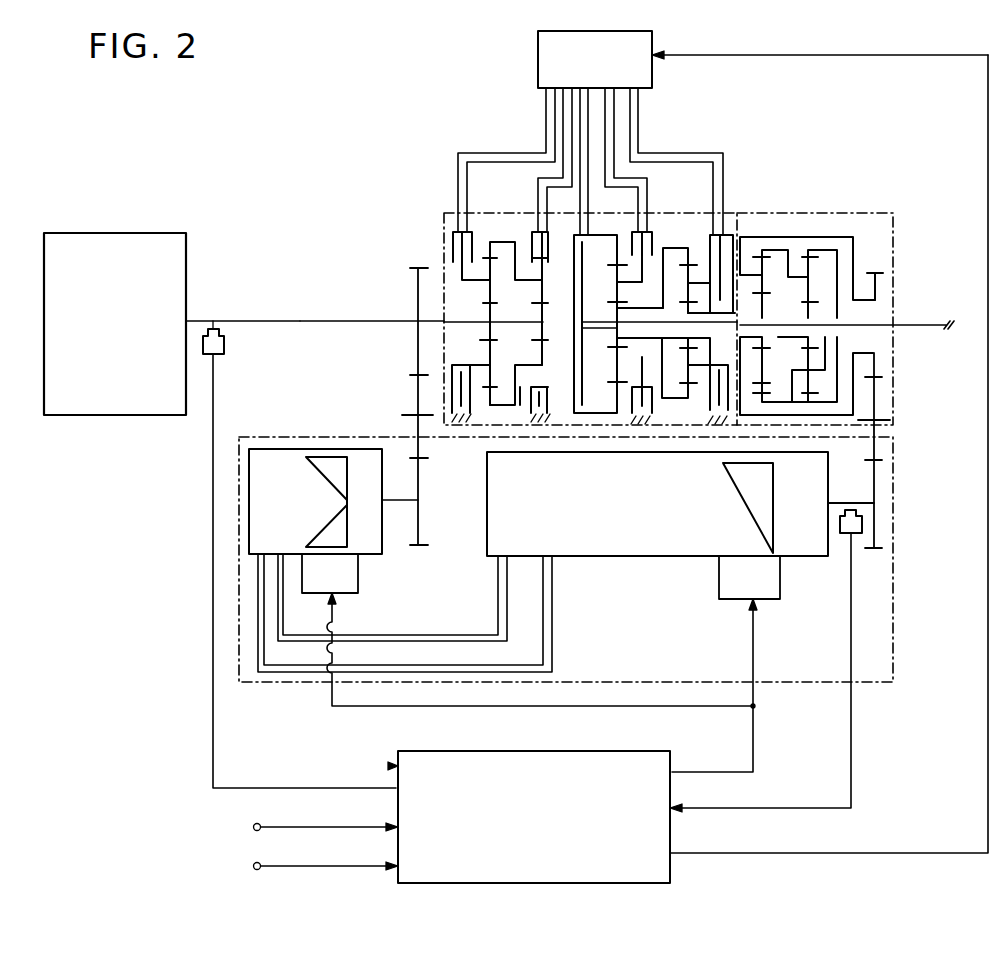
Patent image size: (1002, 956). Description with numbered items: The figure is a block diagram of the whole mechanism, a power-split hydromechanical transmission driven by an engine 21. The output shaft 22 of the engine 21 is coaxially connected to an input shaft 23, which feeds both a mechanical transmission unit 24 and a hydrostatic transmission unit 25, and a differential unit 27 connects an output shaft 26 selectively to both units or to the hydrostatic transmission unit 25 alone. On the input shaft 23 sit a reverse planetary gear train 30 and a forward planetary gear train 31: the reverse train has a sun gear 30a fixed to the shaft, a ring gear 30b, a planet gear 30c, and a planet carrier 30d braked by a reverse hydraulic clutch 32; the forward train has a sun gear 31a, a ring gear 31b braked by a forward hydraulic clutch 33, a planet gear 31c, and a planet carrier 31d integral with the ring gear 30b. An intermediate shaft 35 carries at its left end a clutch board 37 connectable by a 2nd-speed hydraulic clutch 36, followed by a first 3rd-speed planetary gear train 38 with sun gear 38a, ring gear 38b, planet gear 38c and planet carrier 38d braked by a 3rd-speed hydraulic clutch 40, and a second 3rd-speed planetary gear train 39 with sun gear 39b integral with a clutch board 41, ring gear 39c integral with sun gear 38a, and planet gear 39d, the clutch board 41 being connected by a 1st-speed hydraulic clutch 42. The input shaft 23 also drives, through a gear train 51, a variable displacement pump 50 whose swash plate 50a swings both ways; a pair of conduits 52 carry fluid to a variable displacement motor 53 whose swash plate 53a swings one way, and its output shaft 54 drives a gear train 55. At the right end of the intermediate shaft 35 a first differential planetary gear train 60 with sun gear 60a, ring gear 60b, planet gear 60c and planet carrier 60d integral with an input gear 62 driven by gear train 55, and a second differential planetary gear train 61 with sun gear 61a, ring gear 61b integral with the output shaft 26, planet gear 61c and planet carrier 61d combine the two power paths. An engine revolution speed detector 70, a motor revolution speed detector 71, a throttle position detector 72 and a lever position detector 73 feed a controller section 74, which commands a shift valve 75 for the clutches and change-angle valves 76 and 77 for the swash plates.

The engine 21 is at (157, 233).
The output shaft 22 is at (238, 320).
The input shaft 23 is at (373, 320).
The mechanical transmission unit 24 is at (446, 213).
The hydrostatic transmission unit 25 is at (895, 598).
The output shaft 26 is at (918, 325).
The differential unit 27 is at (877, 213).
The reverse planetary gear train 30 is at (483, 230).
The sun gear 30a is at (480, 340).
The ring gear 30b is at (480, 426).
The planet gear 30c is at (483, 303).
The planet carrier 30d is at (452, 368).
The forward planetary gear train 31 is at (548, 232).
The sun gear 31a is at (532, 340).
The ring gear 31b is at (546, 392).
The planet gear 31c is at (532, 303).
The planet carrier 31d is at (544, 365).
The reverse hydraulic clutch 32 is at (476, 246).
The forward hydraulic clutch 33 is at (548, 250).
The intermediate shaft 35 is at (603, 321).
The 2nd-speed hydraulic clutch 36 is at (590, 232).
The clutch board 37 is at (608, 268).
The first 3rd-speed planetary gear train 38 is at (655, 235).
The sun gear 38a is at (616, 334).
The ring gear 38b is at (612, 404).
The planet gear 38c is at (614, 364).
The planet carrier 38d is at (622, 348).
The second 3rd-speed planetary gear train 39 is at (728, 215).
The sun gear 39b is at (659, 315).
The ring gear 39c is at (698, 402).
The planet gear 39d is at (675, 370).
The 3rd-speed hydraulic clutch 40 is at (663, 248).
The clutch board 41 is at (716, 286).
The 1st-speed hydraulic clutch 42 is at (713, 232).
The variable displacement pump 50 is at (343, 449).
The displacement setting variable-angle swash plate 50a is at (322, 457).
The gear train 51 is at (418, 486).
The conduits 52 is at (428, 632).
The variable displacement motor 53 is at (622, 557).
The displacement setting variable-angle swash plate 53a is at (743, 497).
The output shaft 54 is at (835, 503).
The gear train 55 is at (876, 485).
The first differential planetary gear train 60 is at (780, 232).
The sun gear 60a is at (756, 307).
The ring gear 60b is at (808, 254).
The planet gear 60c is at (760, 257).
The planet carrier 60d is at (756, 349).
The second differential planetary gear train 61 is at (830, 232).
The sun gear 61a is at (797, 312).
The ring gear 61b is at (814, 399).
The planet gear 61c is at (808, 351).
The planet carrier 61d is at (770, 392).
The input gear 62 is at (885, 274).
The engine revolution speed detector 70 is at (226, 346).
The motor revolution speed detector 71 is at (856, 535).
The throttle position detector 72 is at (253, 827).
The lever position detector 73 is at (253, 866).
The controller section 74 is at (398, 766).
The shift valve 75 is at (538, 52).
The change-angle valve 76 is at (358, 578).
The change-angle valve 77 is at (781, 590).